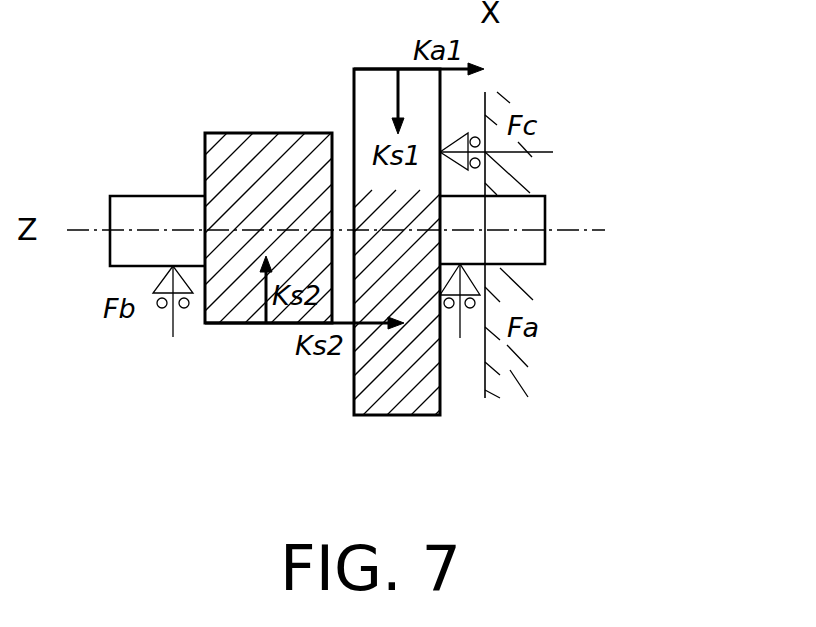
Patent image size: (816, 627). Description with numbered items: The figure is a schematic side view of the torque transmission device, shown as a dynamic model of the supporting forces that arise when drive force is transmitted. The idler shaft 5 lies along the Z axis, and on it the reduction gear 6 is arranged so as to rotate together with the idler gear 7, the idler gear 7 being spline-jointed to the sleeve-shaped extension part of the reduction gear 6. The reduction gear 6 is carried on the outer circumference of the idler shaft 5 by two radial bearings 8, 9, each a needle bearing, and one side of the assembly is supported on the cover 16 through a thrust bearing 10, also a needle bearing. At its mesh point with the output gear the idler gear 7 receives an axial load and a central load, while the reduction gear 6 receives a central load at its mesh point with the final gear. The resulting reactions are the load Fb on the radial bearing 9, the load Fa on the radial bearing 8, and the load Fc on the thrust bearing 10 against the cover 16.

The idler shaft 5 is at (540, 250).
The reduction gear 6 is at (268, 133).
The idler gear 7 is at (402, 415).
The radial bearing 8 is at (471, 309).
The radial bearing 9 is at (160, 309).
The thrust bearing 10 is at (476, 136).
The cover 16 is at (510, 373).